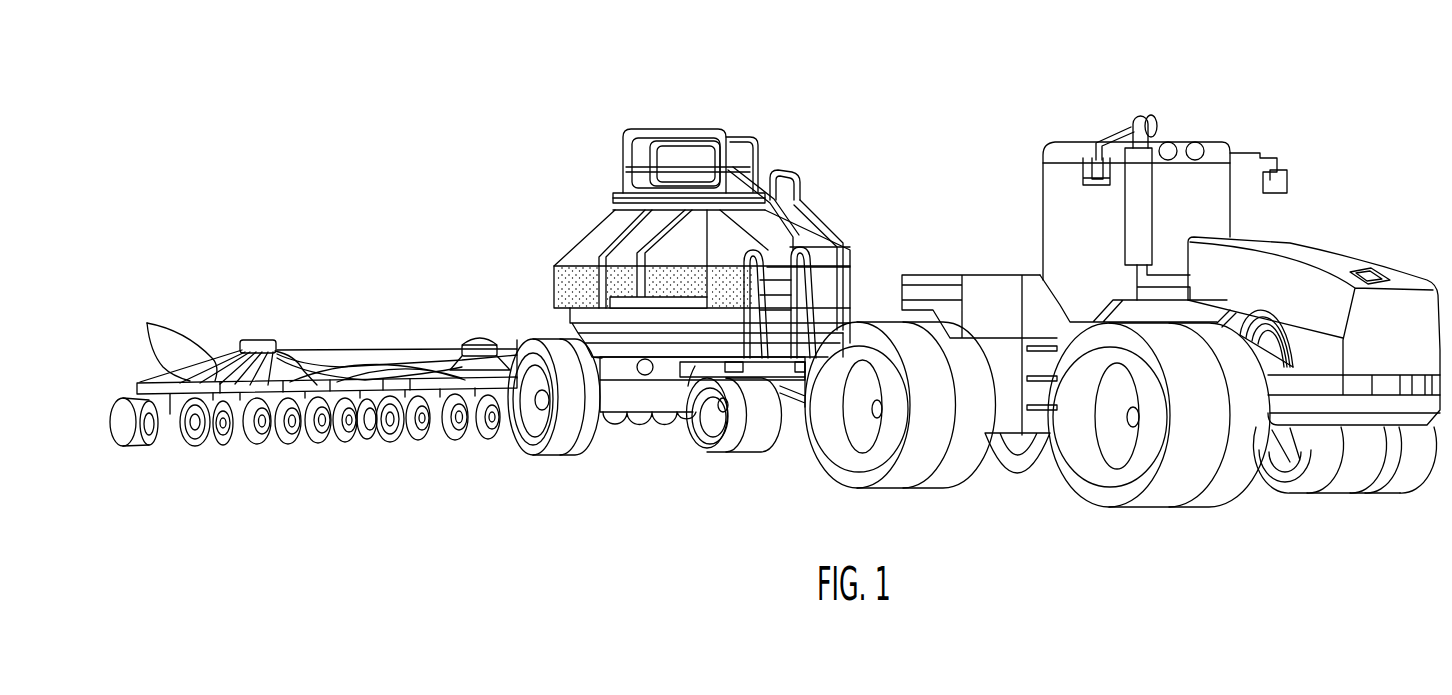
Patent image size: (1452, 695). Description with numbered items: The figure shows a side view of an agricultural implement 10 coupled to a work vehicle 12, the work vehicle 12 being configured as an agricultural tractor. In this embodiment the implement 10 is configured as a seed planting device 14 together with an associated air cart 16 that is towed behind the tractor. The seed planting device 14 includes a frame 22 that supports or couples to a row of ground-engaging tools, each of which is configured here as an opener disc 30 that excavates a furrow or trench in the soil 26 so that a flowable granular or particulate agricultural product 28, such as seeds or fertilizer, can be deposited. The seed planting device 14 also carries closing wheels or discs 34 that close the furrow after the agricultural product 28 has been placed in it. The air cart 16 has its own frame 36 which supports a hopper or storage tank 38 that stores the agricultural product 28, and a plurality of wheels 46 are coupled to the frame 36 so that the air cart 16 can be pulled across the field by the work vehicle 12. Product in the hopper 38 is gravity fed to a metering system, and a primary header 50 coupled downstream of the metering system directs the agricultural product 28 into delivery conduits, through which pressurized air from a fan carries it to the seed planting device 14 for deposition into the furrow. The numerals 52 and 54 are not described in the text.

The agricultural implement 10 is at (231, 133).
The work vehicle 12 is at (1284, 105).
The seed planting device 14 is at (343, 180).
The air cart 16 is at (677, 82).
The frame 22 is at (390, 394).
The soil 26 is at (450, 448).
The agricultural product 28 is at (578, 276).
The opener disc 30 is at (257, 437).
The closing wheels or discs 34 is at (130, 450).
The frame 36 is at (693, 447).
The hopper or storage tank 38 is at (612, 234).
The wheels 46 is at (209, 303).
The primary header 50 is at (292, 370).
The distribution header 52 is at (256, 340).
The primary line 54 is at (147, 323).